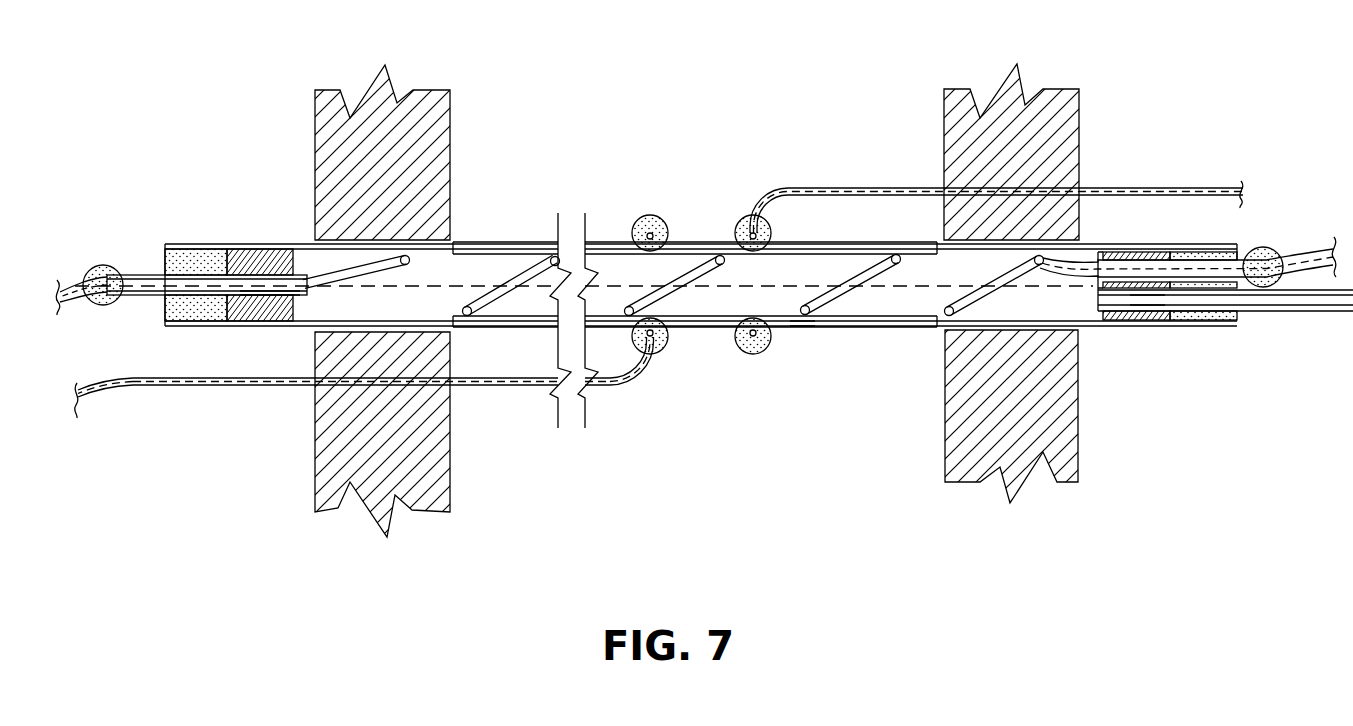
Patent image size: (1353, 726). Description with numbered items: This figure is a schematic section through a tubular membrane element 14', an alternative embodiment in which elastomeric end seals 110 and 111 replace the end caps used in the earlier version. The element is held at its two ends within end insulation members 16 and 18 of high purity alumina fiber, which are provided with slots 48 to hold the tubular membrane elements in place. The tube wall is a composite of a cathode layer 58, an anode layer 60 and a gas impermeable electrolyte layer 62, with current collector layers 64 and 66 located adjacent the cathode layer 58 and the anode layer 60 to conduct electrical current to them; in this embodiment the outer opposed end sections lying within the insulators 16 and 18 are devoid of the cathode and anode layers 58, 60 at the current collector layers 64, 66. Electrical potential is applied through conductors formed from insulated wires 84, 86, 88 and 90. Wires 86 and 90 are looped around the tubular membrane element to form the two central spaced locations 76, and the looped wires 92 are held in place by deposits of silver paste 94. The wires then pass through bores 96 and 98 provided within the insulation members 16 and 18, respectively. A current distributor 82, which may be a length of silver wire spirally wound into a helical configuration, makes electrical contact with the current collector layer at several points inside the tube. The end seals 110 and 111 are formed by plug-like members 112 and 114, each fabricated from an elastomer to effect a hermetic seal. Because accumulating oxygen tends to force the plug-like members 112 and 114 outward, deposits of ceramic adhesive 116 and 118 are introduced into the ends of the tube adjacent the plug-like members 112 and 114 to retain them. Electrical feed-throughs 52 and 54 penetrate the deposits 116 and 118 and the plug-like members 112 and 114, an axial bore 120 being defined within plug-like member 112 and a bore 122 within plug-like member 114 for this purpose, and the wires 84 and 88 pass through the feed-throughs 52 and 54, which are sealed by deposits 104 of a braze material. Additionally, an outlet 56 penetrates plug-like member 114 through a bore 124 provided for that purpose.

The tubular membrane element 14' is at (584, 412).
The end insulation member 16 is at (452, 100).
The end insulation member 18 is at (1082, 102).
The slot 48 is at (701, 311).
The electrical feed-through 52 is at (207, 271).
The electrical feed-through 54 is at (1243, 260).
The outlet tube 56 is at (1225, 343).
The cathode layer 58 is at (695, 202).
The current collector layer 64 is at (495, 242).
The anode layer 60 is at (695, 377).
The current collector layer 66 is at (925, 316).
The electrolyte layer 62 is at (802, 327).
The central spaced locations 76 is at (711, 183).
The current distributor 82 is at (973, 293).
The insulated wire 84 is at (75, 286).
The insulated wire 86 is at (364, 393).
The insulated wire 88 is at (1312, 253).
The insulated wire 90 is at (996, 171).
The looped wires 92 is at (652, 234).
The silver paste deposit 94 is at (740, 342).
The bore 96 is at (430, 381).
The bore 98 is at (953, 189).
The braze material deposit 104 is at (100, 268).
The end seal 110 is at (229, 225).
The end seal 111 is at (1167, 289).
The plug-like member 112 is at (267, 257).
The plug-like member 114 is at (1130, 320).
The ceramic adhesive deposit 116 is at (188, 257).
The ceramic adhesive deposit 118 is at (1204, 257).
The axial bore 120 is at (253, 293).
The bore 122 is at (1133, 262).
The bore 124 is at (1147, 306).